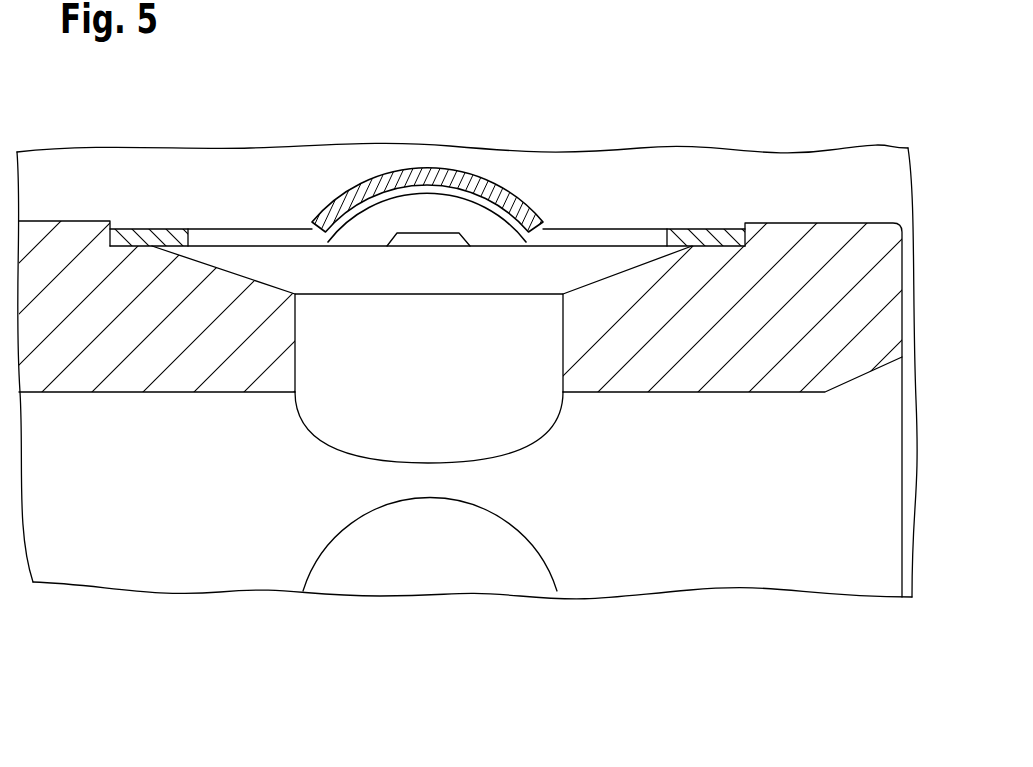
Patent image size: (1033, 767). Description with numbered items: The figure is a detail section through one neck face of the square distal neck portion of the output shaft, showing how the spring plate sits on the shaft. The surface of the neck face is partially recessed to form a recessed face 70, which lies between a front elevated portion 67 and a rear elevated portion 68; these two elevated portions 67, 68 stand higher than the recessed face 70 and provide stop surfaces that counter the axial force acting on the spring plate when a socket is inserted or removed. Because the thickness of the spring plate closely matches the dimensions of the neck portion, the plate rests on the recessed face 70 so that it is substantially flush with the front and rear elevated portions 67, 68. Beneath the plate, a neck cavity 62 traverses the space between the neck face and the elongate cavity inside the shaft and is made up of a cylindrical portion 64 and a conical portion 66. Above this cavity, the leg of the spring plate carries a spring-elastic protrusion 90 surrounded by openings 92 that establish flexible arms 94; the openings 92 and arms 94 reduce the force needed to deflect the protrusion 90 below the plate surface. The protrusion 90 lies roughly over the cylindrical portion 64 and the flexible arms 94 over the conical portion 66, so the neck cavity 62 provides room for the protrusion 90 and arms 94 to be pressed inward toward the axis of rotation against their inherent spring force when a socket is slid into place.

The neck cavity 62 is at (385, 568).
The cylindrical portion 64 is at (347, 337).
The conical portion 66 is at (593, 258).
The front elevated portion 67 is at (827, 223).
The rear elevated portion 68 is at (75, 221).
The recessed face 70 is at (143, 247).
The spring-elastic protrusion 90 is at (380, 183).
The opening 92 is at (428, 240).
The flexible arm 94 is at (227, 238).